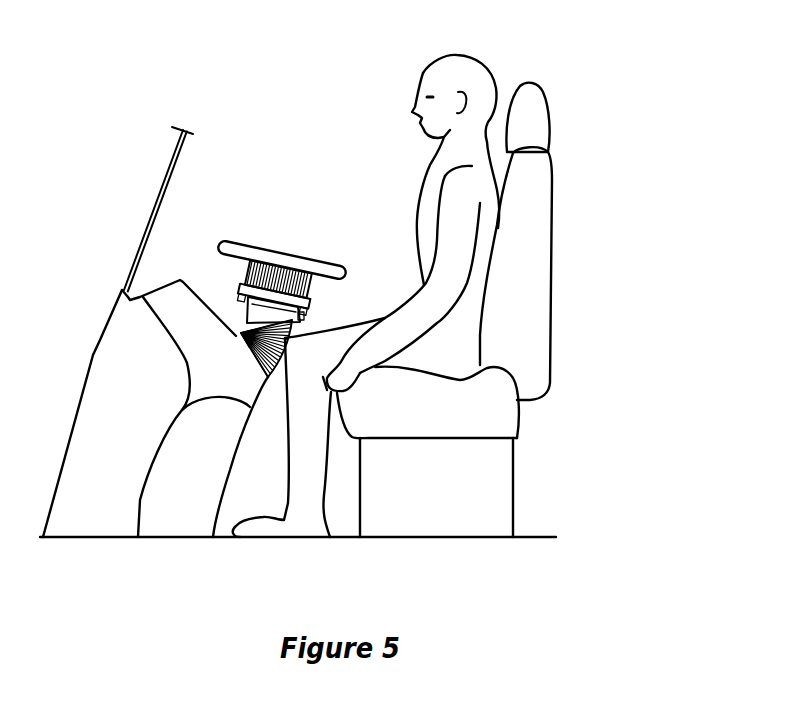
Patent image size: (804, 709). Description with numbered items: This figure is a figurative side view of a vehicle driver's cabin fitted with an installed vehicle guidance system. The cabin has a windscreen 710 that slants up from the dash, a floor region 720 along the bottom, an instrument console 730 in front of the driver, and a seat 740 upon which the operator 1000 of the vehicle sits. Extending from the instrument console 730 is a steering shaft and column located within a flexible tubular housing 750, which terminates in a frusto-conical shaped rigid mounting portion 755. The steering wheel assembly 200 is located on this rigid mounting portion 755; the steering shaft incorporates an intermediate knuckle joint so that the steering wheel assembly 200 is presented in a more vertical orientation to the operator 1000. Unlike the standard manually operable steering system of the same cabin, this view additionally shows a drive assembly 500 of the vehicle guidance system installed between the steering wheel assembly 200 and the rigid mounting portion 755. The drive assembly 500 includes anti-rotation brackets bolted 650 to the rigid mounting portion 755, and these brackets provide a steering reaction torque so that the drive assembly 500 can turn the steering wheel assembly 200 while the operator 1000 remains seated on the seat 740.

The steering wheel assembly 200 is at (242, 246).
The drive assembly 500 is at (249, 274).
The anti-rotation brackets bolted 650 is at (303, 316).
The windscreen 710 is at (150, 212).
The floor region 720 is at (97, 539).
The instrument console 730 is at (203, 294).
The seat 740 is at (537, 265).
The flexible tubular housing 750 is at (240, 332).
The frusto-conical shaped rigid mounting portion 755 is at (245, 342).
The operator 1000 is at (479, 55).